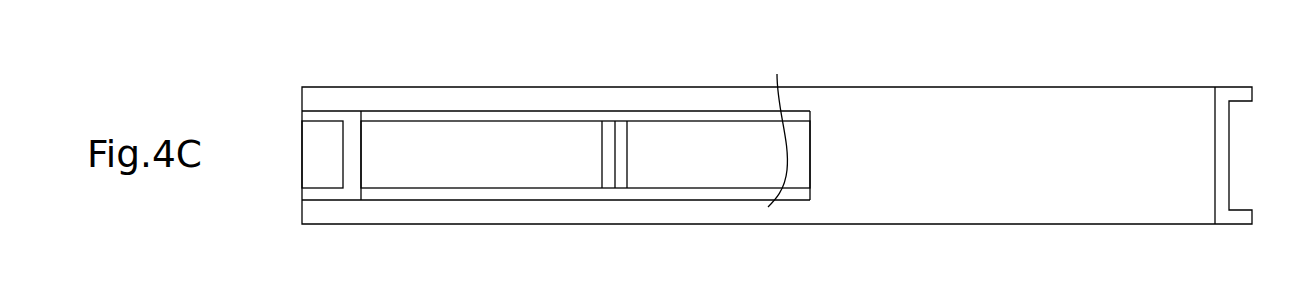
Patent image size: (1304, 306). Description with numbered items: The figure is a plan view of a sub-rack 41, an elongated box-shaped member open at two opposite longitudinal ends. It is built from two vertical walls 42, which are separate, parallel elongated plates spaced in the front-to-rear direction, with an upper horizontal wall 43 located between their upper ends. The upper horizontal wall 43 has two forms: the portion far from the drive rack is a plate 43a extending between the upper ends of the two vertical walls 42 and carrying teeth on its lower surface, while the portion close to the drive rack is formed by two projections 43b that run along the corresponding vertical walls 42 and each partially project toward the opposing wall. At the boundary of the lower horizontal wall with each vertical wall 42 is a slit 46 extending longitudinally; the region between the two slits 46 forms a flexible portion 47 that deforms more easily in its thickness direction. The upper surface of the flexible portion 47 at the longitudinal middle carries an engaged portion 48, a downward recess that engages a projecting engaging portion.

The sub-rack 41 is at (1063, 87).
The vertical wall 42 is at (1245, 99).
The upper horizontal wall 43 is at (878, 38).
The plate 43a is at (868, 112).
The projection 43b is at (752, 106).
The slit 46 is at (546, 110).
The flexible portion 47 is at (800, 167).
The engaged portion 48 is at (616, 151).